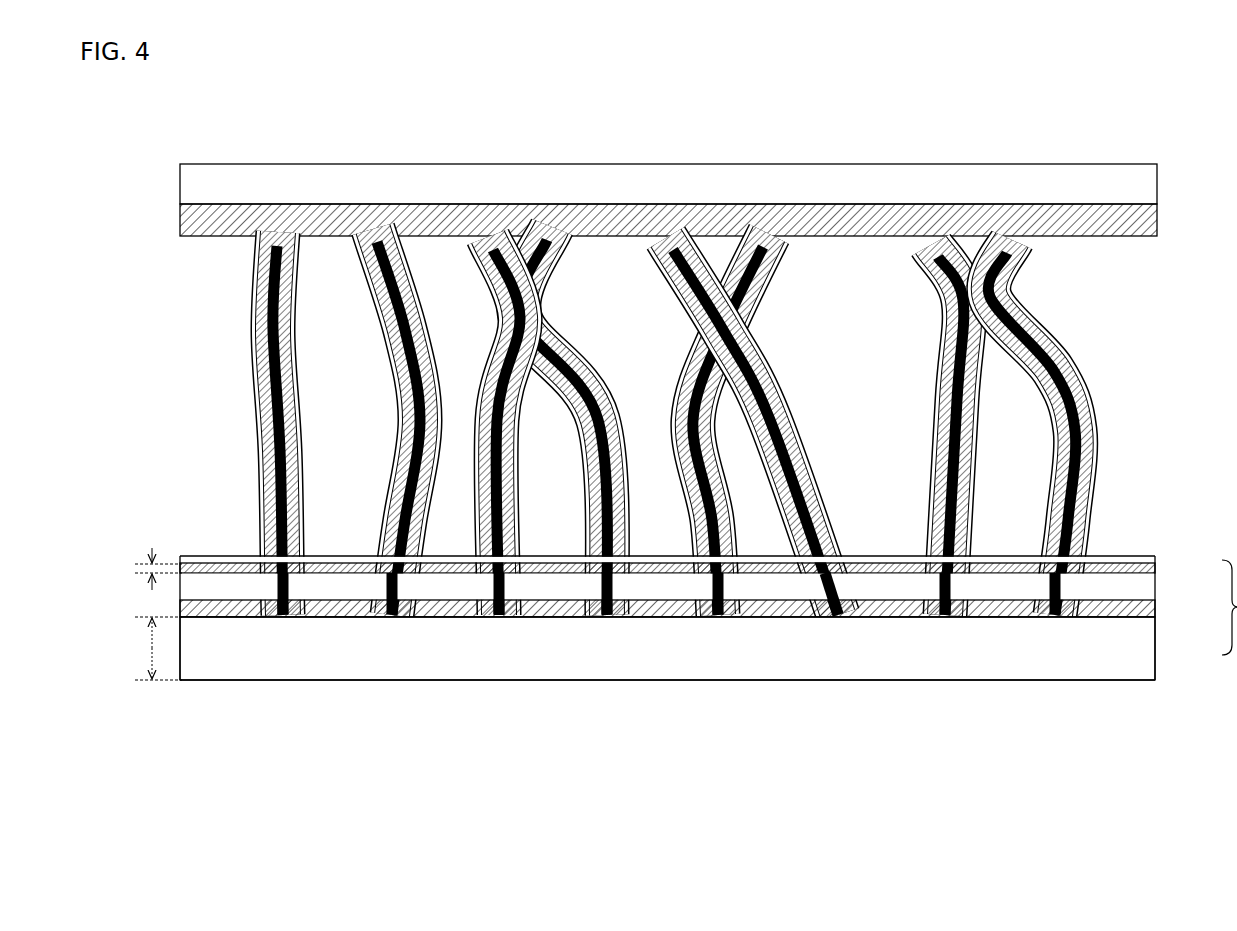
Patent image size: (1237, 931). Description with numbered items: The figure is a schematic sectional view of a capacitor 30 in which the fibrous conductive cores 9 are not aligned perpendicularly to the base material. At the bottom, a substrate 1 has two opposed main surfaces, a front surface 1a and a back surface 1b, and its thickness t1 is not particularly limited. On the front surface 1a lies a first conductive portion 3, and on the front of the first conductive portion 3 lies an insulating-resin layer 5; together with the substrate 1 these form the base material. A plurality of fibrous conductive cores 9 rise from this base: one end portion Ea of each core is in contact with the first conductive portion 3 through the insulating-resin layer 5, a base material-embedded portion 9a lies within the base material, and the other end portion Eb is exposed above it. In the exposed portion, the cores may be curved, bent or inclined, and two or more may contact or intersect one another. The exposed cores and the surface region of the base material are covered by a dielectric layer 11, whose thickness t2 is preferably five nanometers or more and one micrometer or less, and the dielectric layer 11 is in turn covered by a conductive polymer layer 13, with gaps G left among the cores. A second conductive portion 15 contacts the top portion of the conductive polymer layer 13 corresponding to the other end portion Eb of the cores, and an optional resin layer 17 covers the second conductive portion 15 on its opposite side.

The resin layer 17 is at (1148, 183).
The second conductive portion 15 is at (1150, 215).
The fibrous conductive cores 9 is at (1075, 412).
The dielectric layer 11 is at (1080, 460).
The conductive polymer layer 13 is at (1082, 512).
The insulating-resin layer 5 is at (1150, 583).
The first conductive portion 3 is at (1150, 608).
The substrate 1 is at (1148, 645).
The base material-embedded portion 9a is at (1047, 594).
The main surface (front surface) 1a is at (580, 620).
The main surface (back surface) 1b is at (580, 683).
The capacitor 30 is at (1115, 700).
The gaps G is at (627, 277).
The other end portion Eb is at (1012, 255).
The one end portion Ea is at (1085, 601).
The thickness of the substrate t1 is at (155, 648).
The thickness of the dielectric layer t2 is at (155, 564).